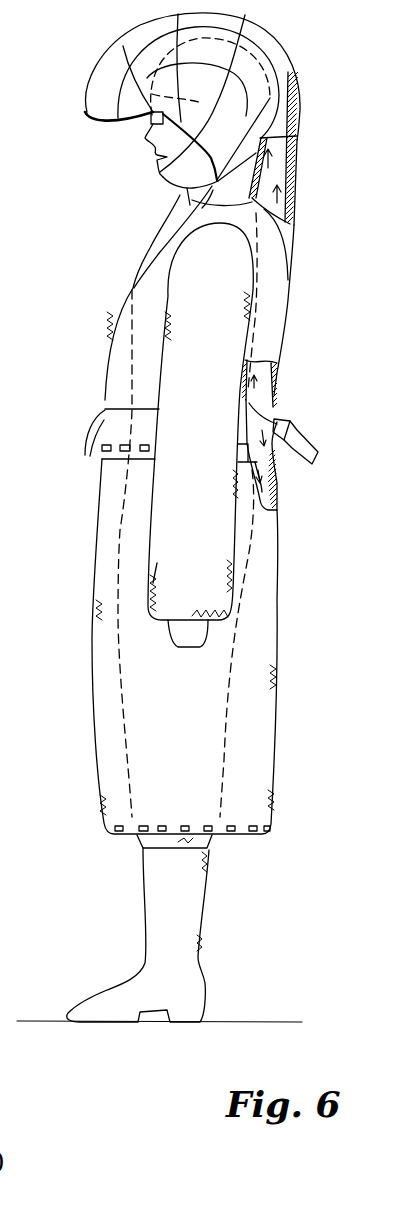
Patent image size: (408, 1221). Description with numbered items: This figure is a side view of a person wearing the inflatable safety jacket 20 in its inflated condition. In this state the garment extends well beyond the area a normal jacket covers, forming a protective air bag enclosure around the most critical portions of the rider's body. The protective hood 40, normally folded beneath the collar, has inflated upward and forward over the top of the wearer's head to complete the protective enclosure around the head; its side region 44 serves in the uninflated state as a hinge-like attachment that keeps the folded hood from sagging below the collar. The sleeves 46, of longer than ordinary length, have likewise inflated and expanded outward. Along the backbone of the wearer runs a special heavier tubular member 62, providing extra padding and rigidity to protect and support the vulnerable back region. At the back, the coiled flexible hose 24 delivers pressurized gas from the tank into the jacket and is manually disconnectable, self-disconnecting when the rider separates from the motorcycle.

The jacket 20 is at (92, 388).
The protective hood 40 is at (137, 35).
The side region of the hood 44 is at (157, 173).
The sleeves 46 is at (178, 493).
The heavier tubular member 62 is at (272, 333).
The hose 24 is at (307, 444).